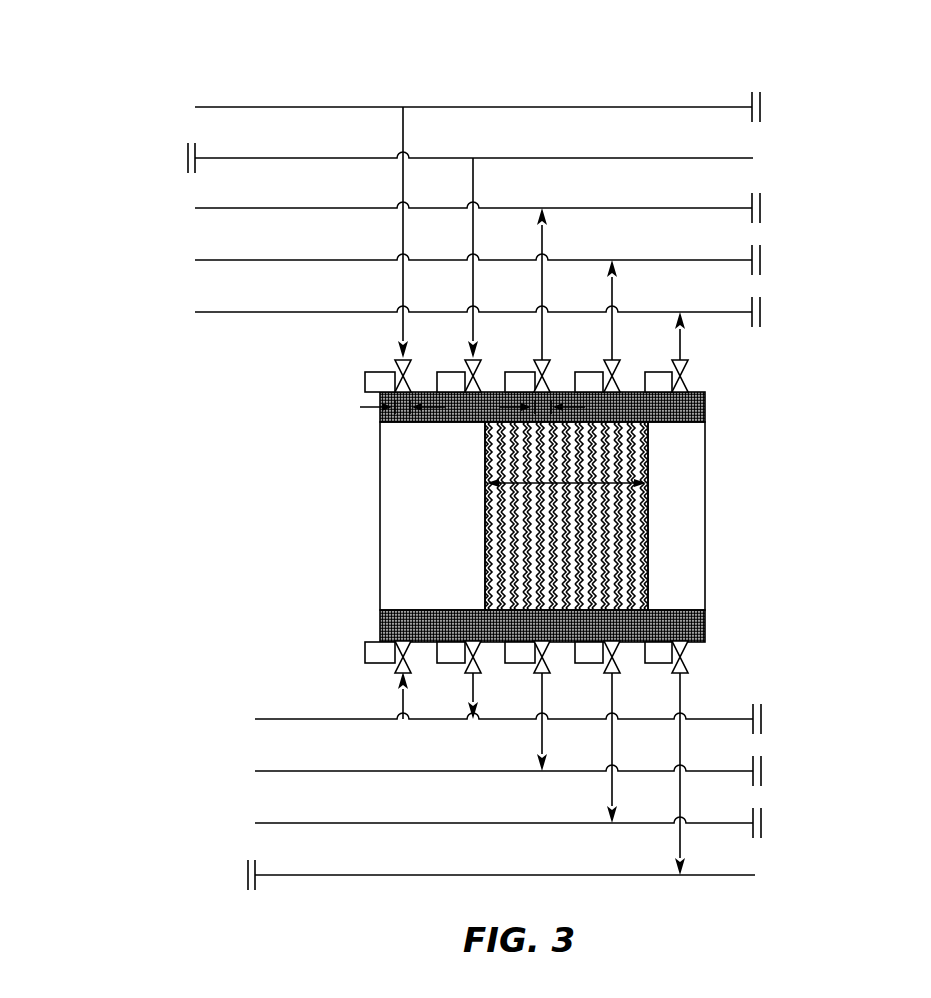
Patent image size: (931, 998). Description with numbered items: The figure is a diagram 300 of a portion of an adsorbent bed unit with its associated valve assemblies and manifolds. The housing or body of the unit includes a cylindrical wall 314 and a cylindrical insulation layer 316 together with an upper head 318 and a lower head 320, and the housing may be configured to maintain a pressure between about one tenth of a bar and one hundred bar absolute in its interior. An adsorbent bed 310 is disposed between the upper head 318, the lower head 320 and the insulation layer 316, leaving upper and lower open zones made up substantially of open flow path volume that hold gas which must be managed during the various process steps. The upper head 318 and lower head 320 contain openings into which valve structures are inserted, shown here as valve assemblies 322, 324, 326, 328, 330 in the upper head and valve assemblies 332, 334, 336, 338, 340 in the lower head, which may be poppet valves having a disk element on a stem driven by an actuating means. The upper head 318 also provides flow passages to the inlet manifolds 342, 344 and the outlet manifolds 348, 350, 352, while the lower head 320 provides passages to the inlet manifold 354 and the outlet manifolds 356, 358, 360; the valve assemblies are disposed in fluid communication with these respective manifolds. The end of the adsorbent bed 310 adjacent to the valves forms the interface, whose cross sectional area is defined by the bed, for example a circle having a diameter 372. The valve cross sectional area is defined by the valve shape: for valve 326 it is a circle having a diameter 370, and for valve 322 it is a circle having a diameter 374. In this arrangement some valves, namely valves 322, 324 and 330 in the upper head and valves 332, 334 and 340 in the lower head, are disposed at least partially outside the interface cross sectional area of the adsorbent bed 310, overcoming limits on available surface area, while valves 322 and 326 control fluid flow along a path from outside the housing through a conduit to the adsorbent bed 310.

The diagram of a portion of an adsorbent bed unit 300 is at (190, 45).
The adsorbent bed 310 is at (485, 537).
The cylindrical wall 314 is at (736, 518).
The cylindrical insulation layer 316 is at (395, 482).
The upper head 318 is at (705, 409).
The lower head 320 is at (705, 623).
The valve assembly 322 is at (409, 371).
The valve assembly 324 is at (479, 371).
The valve assembly 326 is at (575, 353).
The valve assembly 328 is at (645, 353).
The valve assembly 330 is at (713, 353).
The valve assembly 332 is at (411, 672).
The valve assembly 334 is at (481, 672).
The valve assembly 336 is at (550, 672).
The valve assembly 338 is at (620, 672).
The valve assembly 340 is at (688, 672).
The inlet manifold 342 is at (305, 107).
The inlet manifold 344 is at (305, 158).
The outlet manifold 348 is at (305, 208).
The outlet manifold 350 is at (305, 260).
The outlet manifold 352 is at (305, 312).
The inlet manifold 354 is at (345, 719).
The outlet manifold 356 is at (345, 771).
The outlet manifold 358 is at (345, 823).
The outlet manifold 360 is at (345, 875).
The diameter 370 is at (566, 407).
The diameter 372 is at (523, 482).
The diameter 374 is at (378, 407).